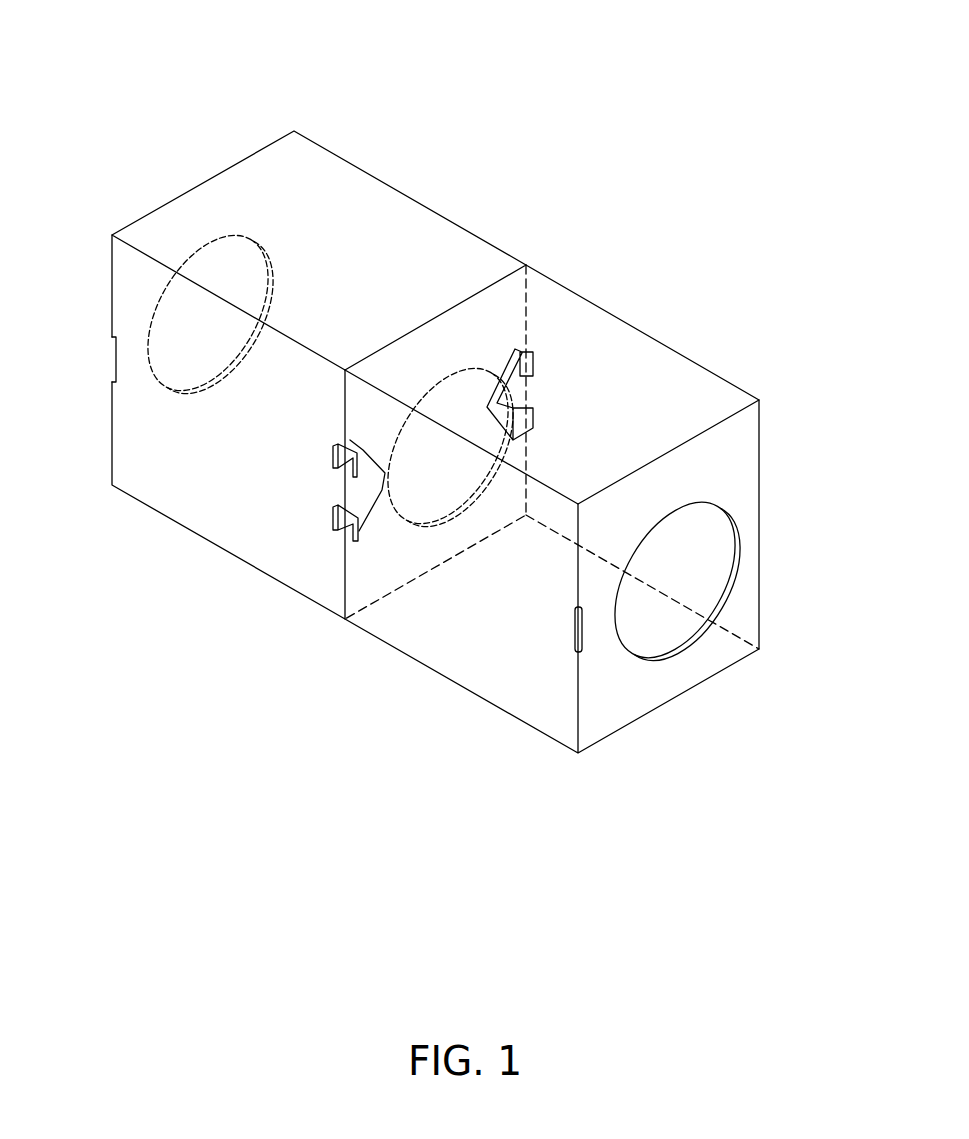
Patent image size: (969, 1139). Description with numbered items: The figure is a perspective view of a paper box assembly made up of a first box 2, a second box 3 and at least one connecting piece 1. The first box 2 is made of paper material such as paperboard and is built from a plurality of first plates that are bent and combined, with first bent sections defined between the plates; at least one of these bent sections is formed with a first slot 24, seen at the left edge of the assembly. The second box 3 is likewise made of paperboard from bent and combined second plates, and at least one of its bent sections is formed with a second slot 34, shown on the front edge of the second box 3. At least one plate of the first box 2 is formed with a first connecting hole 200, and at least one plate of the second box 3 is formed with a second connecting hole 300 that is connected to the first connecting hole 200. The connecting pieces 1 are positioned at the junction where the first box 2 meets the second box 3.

The connecting piece 1 is at (515, 388).
The first box 2 is at (405, 232).
The second box 3 is at (618, 342).
The first slot 24 is at (112, 362).
The second slot 34 is at (577, 633).
The first connecting hole 200 is at (250, 237).
The second connecting hole 300 is at (657, 617).